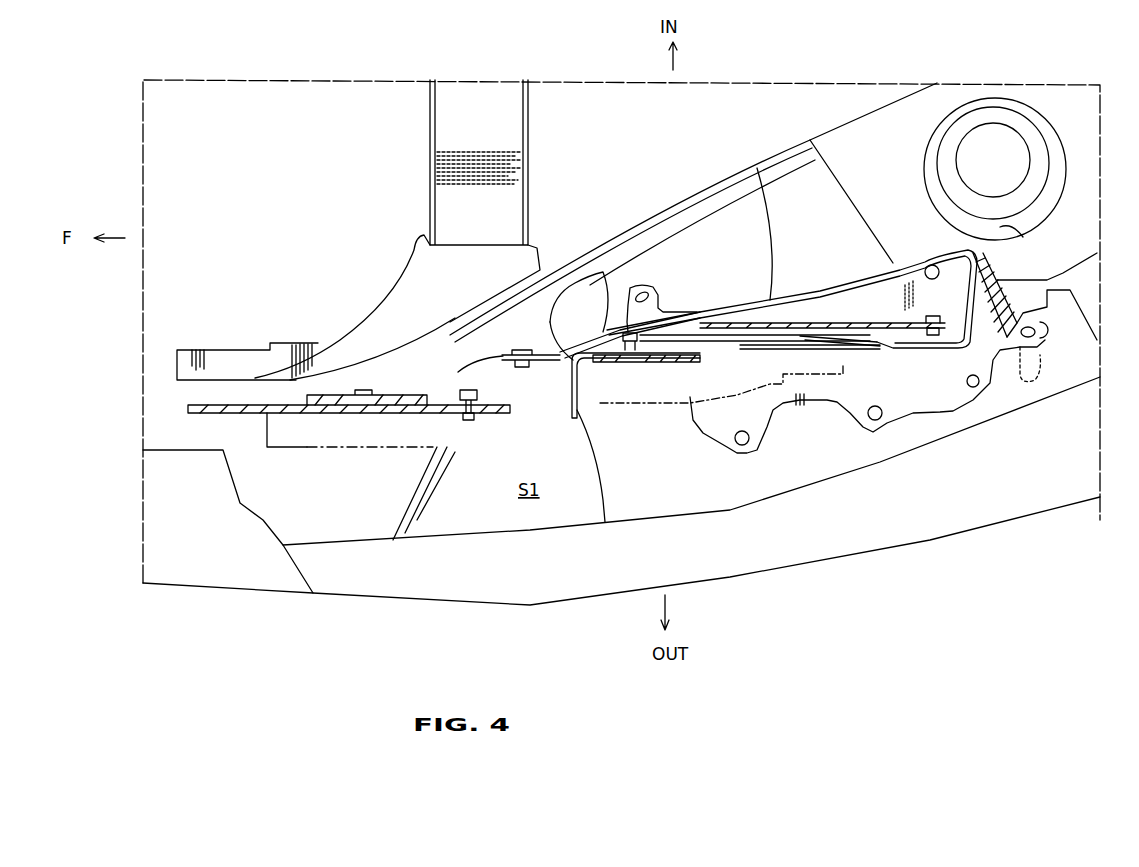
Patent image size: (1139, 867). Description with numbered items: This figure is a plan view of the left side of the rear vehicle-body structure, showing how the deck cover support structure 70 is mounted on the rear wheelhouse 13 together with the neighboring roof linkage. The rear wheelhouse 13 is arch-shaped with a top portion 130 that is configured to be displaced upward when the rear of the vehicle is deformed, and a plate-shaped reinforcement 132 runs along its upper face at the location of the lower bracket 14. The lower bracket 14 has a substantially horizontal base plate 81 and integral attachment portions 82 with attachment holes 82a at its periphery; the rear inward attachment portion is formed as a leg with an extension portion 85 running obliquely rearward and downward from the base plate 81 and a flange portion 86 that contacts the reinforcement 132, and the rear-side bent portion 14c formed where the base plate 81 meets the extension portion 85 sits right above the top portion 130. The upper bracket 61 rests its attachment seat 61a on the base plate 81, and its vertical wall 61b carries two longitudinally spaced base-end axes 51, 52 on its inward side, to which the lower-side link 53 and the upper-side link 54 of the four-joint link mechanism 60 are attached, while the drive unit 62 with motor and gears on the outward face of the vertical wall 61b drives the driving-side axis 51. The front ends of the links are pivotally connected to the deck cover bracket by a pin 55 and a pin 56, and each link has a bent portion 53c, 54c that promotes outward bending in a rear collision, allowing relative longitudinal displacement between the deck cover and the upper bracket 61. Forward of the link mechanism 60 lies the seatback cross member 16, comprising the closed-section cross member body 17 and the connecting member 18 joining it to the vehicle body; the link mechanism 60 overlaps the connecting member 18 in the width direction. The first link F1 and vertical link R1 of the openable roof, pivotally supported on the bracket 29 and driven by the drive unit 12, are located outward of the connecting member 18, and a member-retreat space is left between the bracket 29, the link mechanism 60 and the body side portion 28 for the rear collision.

The drive unit 12 is at (300, 450).
The rear wheelhouse 13 is at (684, 195).
The lower bracket 14 is at (834, 412).
The rear-side bent portion 14c is at (995, 280).
The seatback cross member 16 is at (416, 126).
The cross member body 17 is at (440, 178).
The connecting member 18 is at (440, 262).
The body side portion 28 is at (350, 543).
The bracket 29 is at (250, 413).
The base-end axis 51 is at (832, 344).
The base-end axis 52 is at (932, 316).
The lower-side link 53 is at (786, 334).
The bent portion 53c is at (580, 345).
The upper-side link 54 is at (880, 323).
The bent portion 54c is at (690, 312).
The pin 55 is at (522, 368).
The pin 56 is at (633, 348).
The link mechanism 60 is at (752, 312).
The upper bracket 61 is at (933, 358).
The attachment seat 61a is at (893, 268).
The vertical wall 61b is at (870, 348).
The drive unit 62 is at (663, 404).
The support structure 70 is at (811, 230).
The base plate 81 is at (790, 405).
The attachment portion 82 is at (750, 446).
The attachment hole 82a is at (770, 416).
The extension portion 85 is at (1003, 310).
The flange portion 86 is at (1047, 338).
The top portion 130 is at (1054, 266).
The reinforcement 132 is at (598, 503).
The vertical link R1 is at (333, 395).
The first link F1 is at (448, 392).